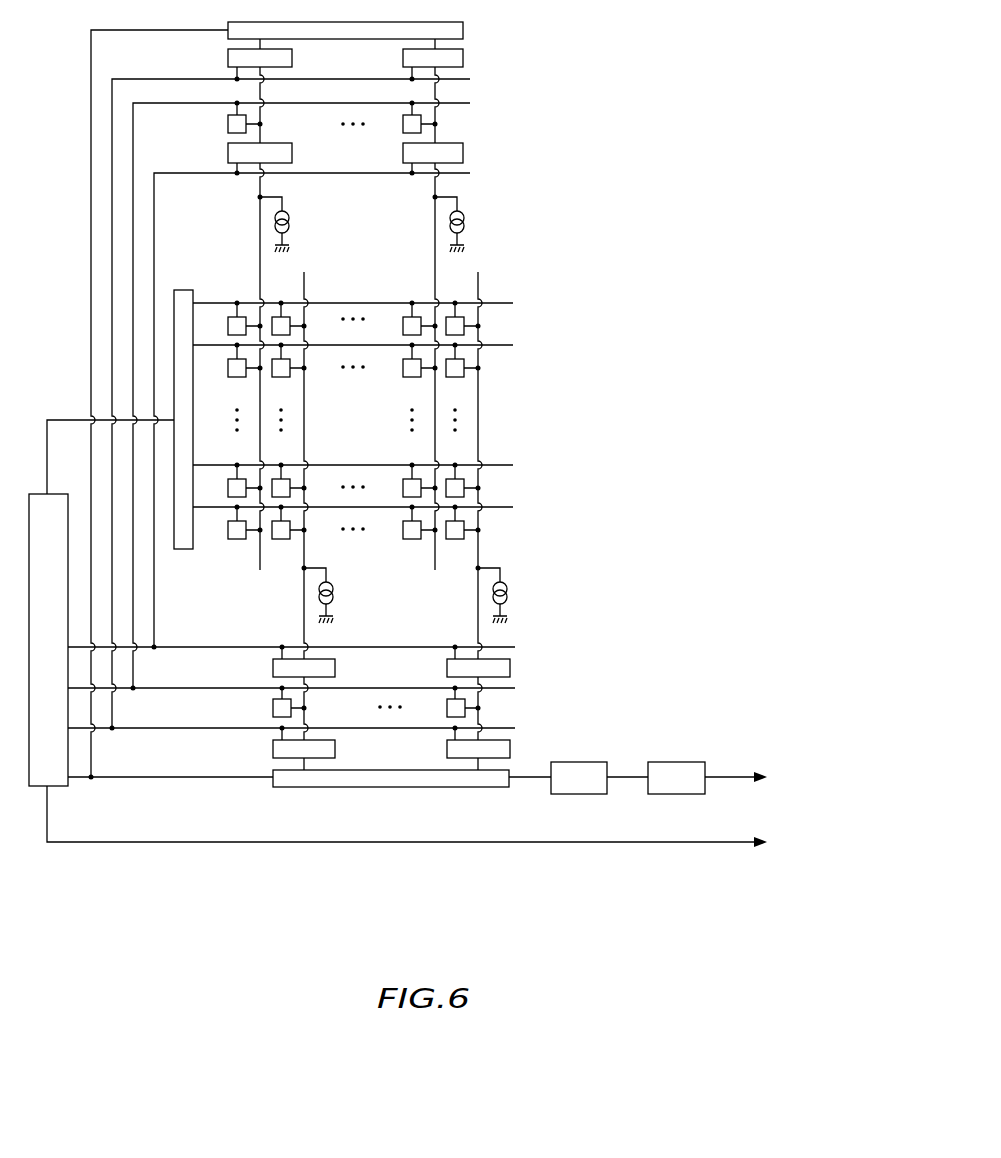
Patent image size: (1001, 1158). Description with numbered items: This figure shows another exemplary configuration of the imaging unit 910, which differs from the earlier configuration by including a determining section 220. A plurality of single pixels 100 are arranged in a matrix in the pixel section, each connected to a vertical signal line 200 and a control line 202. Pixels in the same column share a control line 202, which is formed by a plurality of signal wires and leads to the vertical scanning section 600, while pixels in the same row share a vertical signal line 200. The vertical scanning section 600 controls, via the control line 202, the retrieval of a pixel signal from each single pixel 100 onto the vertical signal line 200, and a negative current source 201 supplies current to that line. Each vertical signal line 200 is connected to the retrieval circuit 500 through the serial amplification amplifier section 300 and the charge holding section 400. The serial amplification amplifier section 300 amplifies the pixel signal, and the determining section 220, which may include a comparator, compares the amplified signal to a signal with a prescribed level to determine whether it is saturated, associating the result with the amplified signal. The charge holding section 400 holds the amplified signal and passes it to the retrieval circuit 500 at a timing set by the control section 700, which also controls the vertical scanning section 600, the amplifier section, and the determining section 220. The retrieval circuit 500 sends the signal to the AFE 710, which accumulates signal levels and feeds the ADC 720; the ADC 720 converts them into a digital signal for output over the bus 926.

The single pixel 100 is at (466, 368).
The vertical signal line 200 is at (478, 420).
The negative current source 201 is at (508, 594).
The control line 202 is at (355, 303).
The determining section 220 is at (466, 716).
The serial amplification amplifier section 300 is at (510, 667).
The charge holding section 400 is at (510, 748).
The retrieval circuit 500 is at (393, 787).
The vertical scanning section 600 is at (183, 290).
The control section 700 is at (57, 786).
The AFE 710 is at (580, 794).
The ADC 720 is at (675, 794).
The imaging unit 910 is at (442, 905).
The bus 926 is at (426, 810).